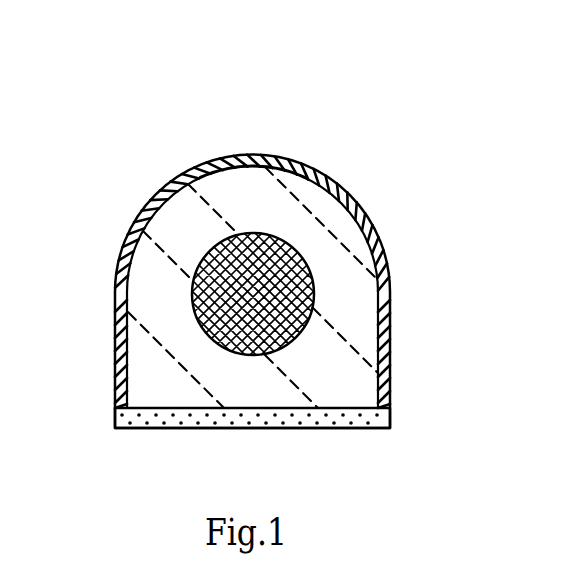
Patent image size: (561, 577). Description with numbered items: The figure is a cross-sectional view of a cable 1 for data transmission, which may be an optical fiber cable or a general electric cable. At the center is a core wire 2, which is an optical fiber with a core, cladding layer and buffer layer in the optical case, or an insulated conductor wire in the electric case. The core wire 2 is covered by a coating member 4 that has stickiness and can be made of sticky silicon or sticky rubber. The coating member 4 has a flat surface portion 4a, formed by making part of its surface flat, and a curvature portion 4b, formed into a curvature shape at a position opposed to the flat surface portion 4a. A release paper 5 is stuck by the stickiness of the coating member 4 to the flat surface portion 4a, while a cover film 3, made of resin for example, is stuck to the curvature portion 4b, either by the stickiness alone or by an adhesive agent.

The cable 1 is at (319, 106).
The core wire 2 is at (200, 256).
The cover film 3 is at (388, 248).
The coating member 4 is at (363, 331).
The flat surface portion 4a is at (210, 428).
The curvature portion 4b is at (250, 155).
The release paper 5 is at (380, 421).